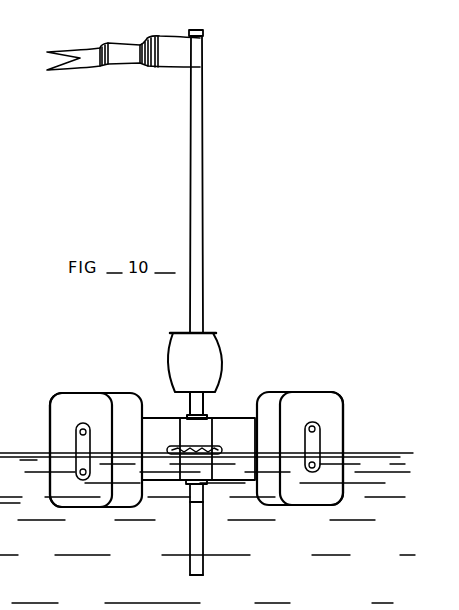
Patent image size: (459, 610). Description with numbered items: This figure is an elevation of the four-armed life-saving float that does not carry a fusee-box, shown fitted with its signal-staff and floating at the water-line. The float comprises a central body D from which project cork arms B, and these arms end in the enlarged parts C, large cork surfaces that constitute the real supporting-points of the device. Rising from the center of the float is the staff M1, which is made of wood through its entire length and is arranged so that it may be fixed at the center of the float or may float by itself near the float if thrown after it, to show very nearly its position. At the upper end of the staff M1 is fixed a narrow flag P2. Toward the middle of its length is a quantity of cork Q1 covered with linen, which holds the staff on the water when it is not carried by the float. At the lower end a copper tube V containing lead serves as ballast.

The narrow flag P2 is at (123, 63).
The staff M1 is at (210, 181).
The cork Q1 is at (195, 376).
The cork arms B is at (198, 449).
The central body D is at (194, 440).
The enlarged parts C is at (196, 449).
The copper tube V is at (203, 527).